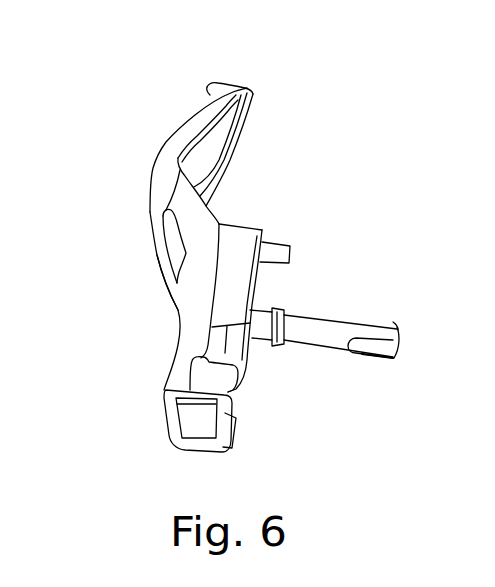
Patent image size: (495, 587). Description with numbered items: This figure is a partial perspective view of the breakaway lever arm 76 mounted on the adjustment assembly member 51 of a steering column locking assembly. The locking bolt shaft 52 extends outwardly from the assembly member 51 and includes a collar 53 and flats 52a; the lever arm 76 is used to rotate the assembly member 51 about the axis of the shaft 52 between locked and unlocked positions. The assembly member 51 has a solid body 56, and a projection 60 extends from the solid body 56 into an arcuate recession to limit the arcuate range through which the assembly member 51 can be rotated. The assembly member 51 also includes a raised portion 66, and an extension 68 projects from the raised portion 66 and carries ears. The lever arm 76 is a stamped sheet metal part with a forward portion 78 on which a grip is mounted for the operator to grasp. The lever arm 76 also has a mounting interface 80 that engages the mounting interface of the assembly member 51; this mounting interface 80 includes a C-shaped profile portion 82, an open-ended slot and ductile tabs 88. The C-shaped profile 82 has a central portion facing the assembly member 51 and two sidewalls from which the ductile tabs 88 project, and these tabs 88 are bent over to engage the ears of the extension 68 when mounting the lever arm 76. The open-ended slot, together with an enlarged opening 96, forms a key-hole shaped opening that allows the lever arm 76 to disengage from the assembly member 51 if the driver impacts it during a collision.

The adjustment assembly member 51 is at (254, 348).
The locking bolt shaft 52 is at (337, 325).
The flats 52a is at (367, 352).
The collar 53 is at (277, 310).
The solid body 56 is at (226, 288).
The projection 60 is at (280, 250).
The raised portion 66 is at (247, 229).
The extension 68 is at (185, 423).
The breakaway lever arm 76 is at (187, 127).
The forward portion 78 is at (220, 95).
The mounting interface 80 is at (160, 367).
The C-shaped profile portion 82 is at (179, 323).
The ductile projecting tabs 88 is at (233, 398).
The enlarged opening 96 is at (173, 248).